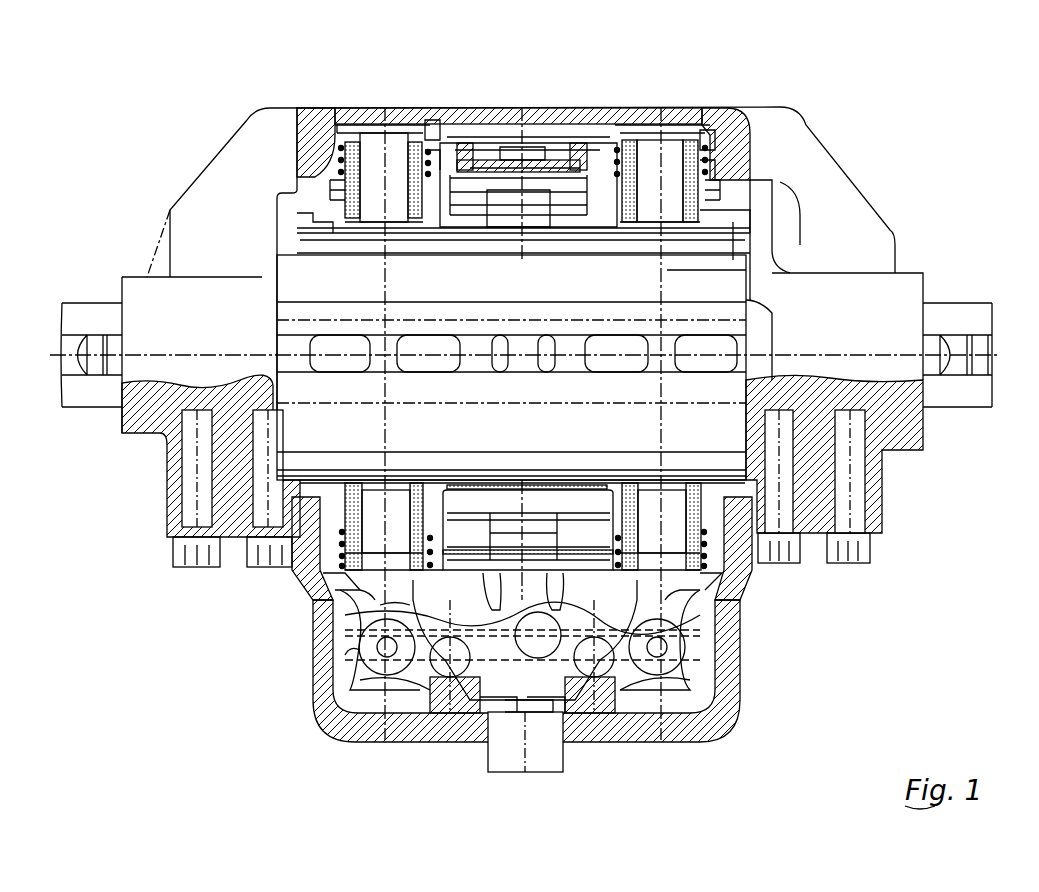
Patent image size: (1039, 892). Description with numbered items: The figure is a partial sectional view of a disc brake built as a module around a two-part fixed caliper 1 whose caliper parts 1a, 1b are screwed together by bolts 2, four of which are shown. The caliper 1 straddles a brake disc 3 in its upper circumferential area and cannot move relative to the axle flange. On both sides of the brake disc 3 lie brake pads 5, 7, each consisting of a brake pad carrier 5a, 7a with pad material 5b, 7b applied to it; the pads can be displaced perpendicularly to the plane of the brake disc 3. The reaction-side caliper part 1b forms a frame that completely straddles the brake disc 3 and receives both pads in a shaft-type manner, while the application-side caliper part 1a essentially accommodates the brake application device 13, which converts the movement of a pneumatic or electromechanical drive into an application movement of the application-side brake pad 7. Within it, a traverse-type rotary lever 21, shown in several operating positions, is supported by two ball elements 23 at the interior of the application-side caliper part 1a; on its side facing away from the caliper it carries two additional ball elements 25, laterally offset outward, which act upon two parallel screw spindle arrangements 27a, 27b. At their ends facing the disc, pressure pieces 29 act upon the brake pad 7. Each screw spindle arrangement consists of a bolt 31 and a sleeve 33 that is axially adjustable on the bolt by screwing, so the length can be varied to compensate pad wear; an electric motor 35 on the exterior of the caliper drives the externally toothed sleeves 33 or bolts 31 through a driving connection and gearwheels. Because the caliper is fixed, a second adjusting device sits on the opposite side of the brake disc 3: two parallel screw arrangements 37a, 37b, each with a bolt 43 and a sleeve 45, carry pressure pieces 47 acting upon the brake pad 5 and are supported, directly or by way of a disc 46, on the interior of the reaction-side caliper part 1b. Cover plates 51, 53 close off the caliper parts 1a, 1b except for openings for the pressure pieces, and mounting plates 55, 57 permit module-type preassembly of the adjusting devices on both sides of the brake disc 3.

The caliper 1 is at (876, 182).
The application-side caliper part 1a is at (882, 513).
The reaction-side caliper part 1b is at (923, 413).
The bolts 2 is at (853, 472).
The brake disc 3 is at (990, 310).
The brake pad 5 is at (328, 268).
The brake pad carrier 5a is at (342, 250).
The pad material 5b is at (316, 283).
The brake pad 7 is at (328, 434).
The brake pad carrier 7a is at (315, 472).
The pad material 7b is at (308, 418).
The brake application device 13 is at (352, 700).
The rotary lever 21 is at (647, 683).
The ball elements 23 is at (470, 650).
The additional ball elements 25 is at (822, 662).
The screw spindle arrangement 27a is at (330, 593).
The screw spindle arrangement 27b is at (712, 594).
The pressure pieces 29 is at (758, 563).
The bolt 31 is at (377, 667).
The sleeve 33 is at (345, 655).
The electric motor 35 is at (540, 760).
The screw arrangement 37a is at (432, 128).
The screw arrangement 37b is at (708, 153).
The bolt 43 is at (408, 185).
The sleeve 45 is at (418, 148).
The disc 46 is at (380, 167).
The pressure pieces 47 is at (325, 230).
The cover plate 51 is at (532, 230).
The cover plate 53 is at (577, 490).
The mounting plate 55 is at (568, 210).
The mounting plate 57 is at (480, 493).